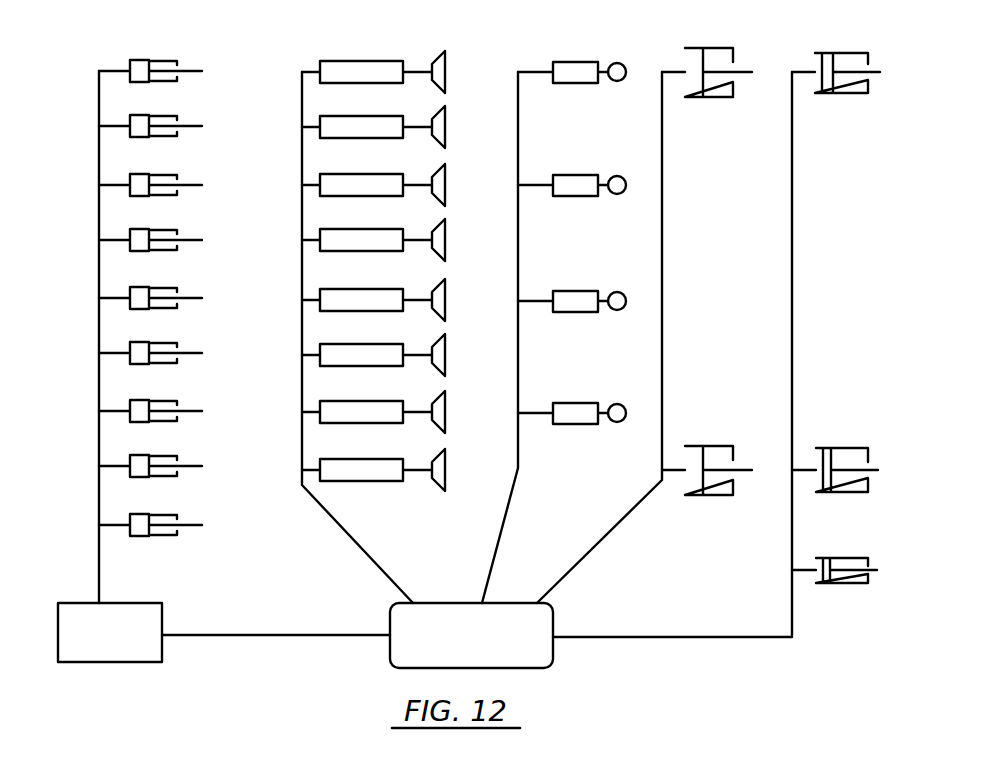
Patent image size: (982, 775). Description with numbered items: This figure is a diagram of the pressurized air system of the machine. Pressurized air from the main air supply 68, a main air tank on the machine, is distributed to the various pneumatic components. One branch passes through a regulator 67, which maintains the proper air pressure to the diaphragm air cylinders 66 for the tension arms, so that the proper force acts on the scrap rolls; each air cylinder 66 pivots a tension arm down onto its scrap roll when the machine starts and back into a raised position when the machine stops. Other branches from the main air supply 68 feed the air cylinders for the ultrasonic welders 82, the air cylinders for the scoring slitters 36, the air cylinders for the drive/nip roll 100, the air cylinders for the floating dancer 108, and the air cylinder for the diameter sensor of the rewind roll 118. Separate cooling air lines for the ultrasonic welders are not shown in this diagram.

The scoring slitters 36 is at (588, 84).
The diaphragm air cylinder 66 is at (166, 83).
The regulator 67 is at (162, 603).
The main air supply 68 is at (555, 612).
The ultrasonic welders 82 is at (372, 84).
The drive/nip roll 100 is at (722, 44).
The floating dancer 108 is at (873, 44).
The diameter sensor of the rewind roll 118 is at (862, 583).